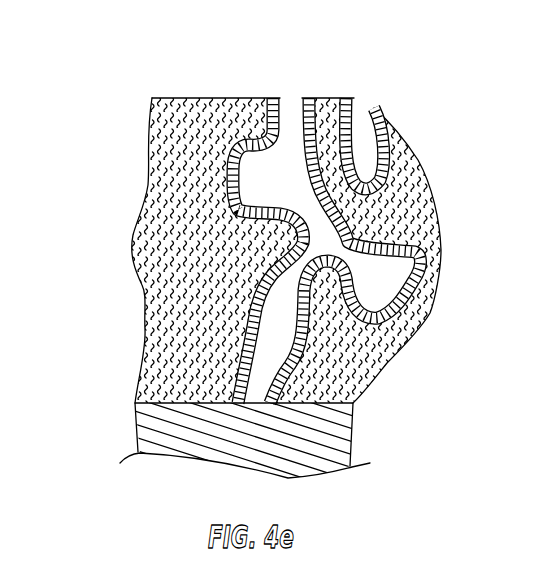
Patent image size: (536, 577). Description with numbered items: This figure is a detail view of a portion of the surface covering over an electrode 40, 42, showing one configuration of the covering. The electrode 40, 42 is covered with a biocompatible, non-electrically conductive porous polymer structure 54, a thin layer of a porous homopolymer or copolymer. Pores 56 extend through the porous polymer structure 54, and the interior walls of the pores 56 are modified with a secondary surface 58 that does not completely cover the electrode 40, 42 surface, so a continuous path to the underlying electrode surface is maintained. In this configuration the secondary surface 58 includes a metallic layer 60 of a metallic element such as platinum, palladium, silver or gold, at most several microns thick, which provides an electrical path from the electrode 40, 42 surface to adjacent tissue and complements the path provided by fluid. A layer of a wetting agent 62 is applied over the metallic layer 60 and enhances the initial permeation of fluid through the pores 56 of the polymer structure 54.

The porous polymer structure 54 is at (208, 98).
The pores 56 is at (327, 202).
The secondary surface 58 is at (278, 89).
The metallic layer 60 is at (311, 98).
The wetting agent 62 is at (327, 202).
The electrode 40 is at (200, 426).
The electrode 42 is at (133, 420).